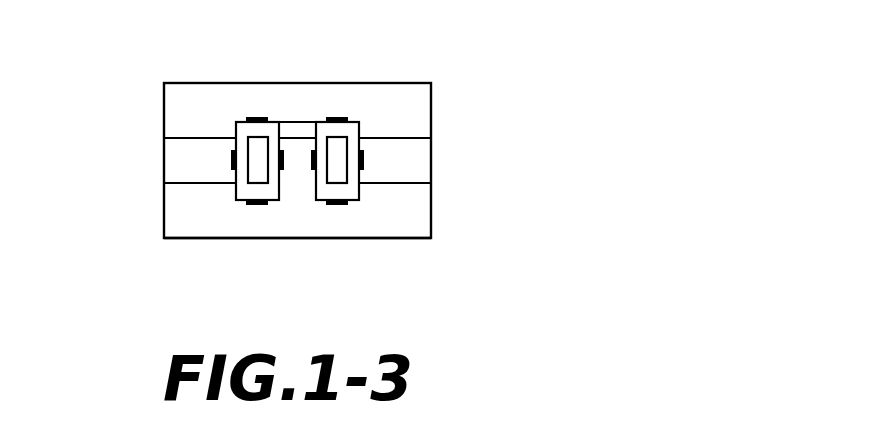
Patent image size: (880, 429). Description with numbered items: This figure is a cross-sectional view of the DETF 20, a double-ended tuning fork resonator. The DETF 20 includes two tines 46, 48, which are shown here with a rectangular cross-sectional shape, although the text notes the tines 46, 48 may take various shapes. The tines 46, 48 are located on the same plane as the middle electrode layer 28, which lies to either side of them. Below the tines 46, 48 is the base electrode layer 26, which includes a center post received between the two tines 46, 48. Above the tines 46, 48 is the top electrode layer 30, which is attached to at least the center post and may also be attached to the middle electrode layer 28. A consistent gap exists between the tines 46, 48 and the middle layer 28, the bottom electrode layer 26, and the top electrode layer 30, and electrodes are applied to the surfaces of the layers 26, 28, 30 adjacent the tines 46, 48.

The DETF 20 is at (465, 82).
The base electrode layer 26 is at (178, 220).
The middle electrode layer 28 is at (178, 162).
The top electrode layer 30 is at (178, 110).
The tine 46 is at (337, 170).
The tine 48 is at (257, 155).